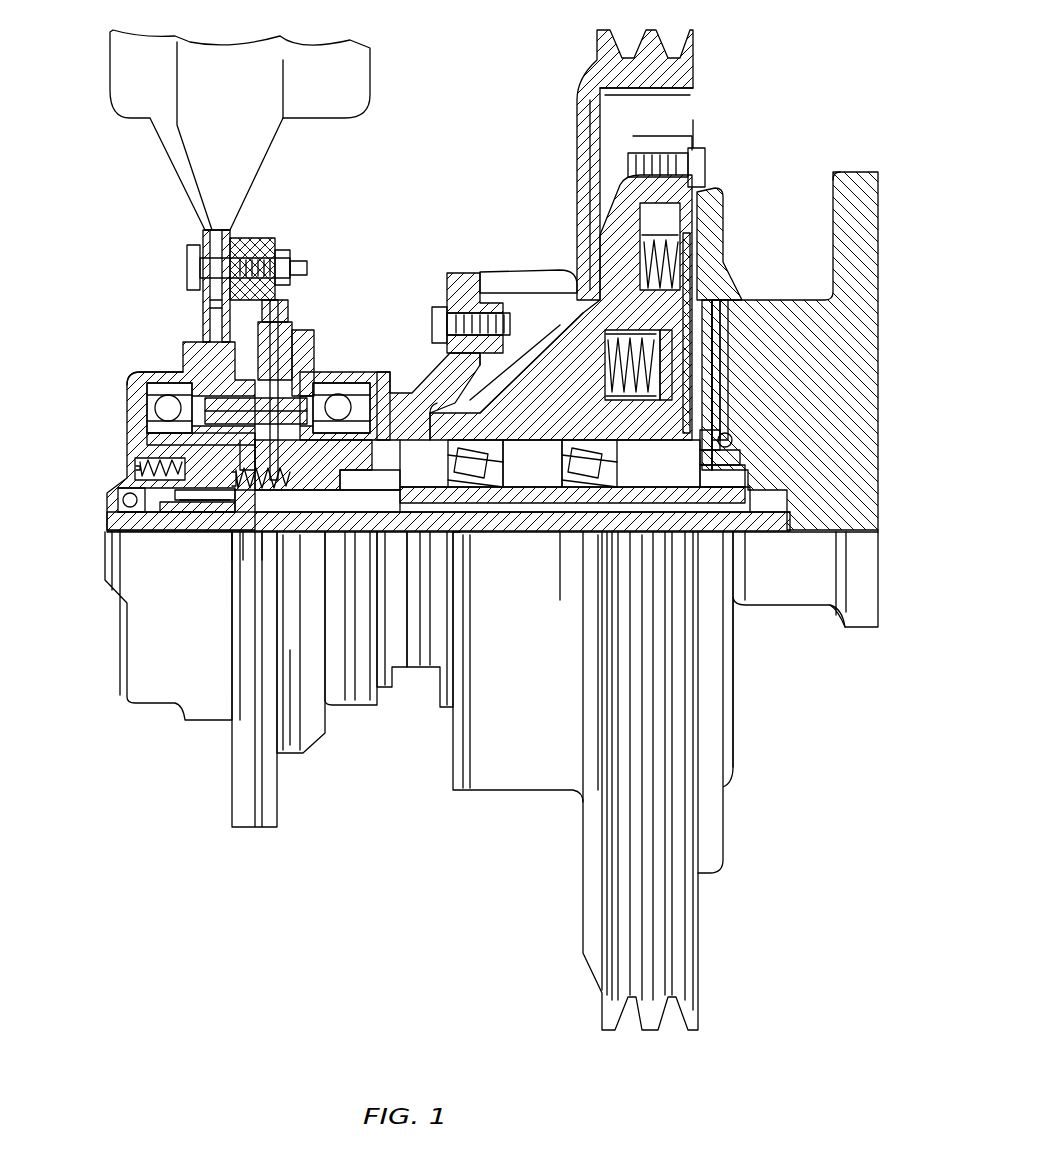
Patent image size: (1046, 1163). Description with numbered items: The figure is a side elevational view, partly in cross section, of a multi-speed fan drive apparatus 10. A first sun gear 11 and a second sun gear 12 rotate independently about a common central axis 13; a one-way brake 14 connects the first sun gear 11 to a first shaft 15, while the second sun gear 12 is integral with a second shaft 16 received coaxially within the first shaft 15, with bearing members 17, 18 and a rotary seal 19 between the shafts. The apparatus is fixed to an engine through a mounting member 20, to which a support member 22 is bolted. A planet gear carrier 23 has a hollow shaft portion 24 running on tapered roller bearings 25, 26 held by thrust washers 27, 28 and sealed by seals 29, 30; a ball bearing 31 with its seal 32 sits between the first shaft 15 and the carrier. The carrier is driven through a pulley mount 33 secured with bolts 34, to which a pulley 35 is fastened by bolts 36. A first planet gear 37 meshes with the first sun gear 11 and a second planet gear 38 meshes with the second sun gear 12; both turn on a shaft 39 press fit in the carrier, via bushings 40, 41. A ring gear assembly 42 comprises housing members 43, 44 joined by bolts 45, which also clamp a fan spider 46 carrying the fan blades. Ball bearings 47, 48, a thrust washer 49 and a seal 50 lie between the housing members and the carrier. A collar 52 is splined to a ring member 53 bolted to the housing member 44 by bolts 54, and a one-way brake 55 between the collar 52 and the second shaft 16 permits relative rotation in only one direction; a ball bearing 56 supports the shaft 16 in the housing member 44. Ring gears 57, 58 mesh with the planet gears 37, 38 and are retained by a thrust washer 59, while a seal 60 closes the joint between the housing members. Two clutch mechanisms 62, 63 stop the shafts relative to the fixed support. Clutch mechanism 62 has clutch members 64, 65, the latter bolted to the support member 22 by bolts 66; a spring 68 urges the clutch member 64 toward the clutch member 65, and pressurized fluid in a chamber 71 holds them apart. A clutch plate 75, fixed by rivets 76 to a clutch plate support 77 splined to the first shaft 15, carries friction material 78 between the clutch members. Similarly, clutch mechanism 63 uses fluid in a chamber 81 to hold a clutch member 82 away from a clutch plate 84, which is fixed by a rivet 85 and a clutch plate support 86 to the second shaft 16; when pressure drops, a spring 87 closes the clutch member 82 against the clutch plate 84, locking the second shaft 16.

The multi-speed fan drive apparatus 10 is at (816, 90).
The first sun gear 11 is at (269, 679).
The second sun gear 12 is at (232, 474).
The central axis 13 is at (832, 530).
The one-way brake 14 is at (272, 545).
The first shaft 15 is at (520, 545).
The second shaft 16 is at (467, 545).
The bearing member 17 is at (268, 545).
The bearing member 18 is at (342, 540).
The rotary seal 19 is at (405, 612).
The mounting member 20 is at (797, 312).
The support member 22 is at (628, 196).
The planet gear carrier 23 is at (282, 545).
The hollow shaft portion 24 is at (544, 514).
The tapered roller bearing 25 is at (488, 515).
The tapered roller bearing 26 is at (568, 545).
The thrust washer 27 is at (455, 545).
The thrust washer 28 is at (615, 540).
The seal 29 is at (470, 442).
The seal 30 is at (626, 444).
The ball bearing 31 is at (318, 542).
The seal 32 is at (412, 545).
The pulley mount 33 is at (500, 372).
The bolts 34 is at (480, 405).
The pulley 35 is at (590, 92).
The bolts 36 is at (430, 305).
The first planet gear 37 is at (368, 330).
The second planet gear 38 is at (225, 392).
The shaft 39 is at (178, 378).
The bushing 40 is at (323, 393).
The bushing 41 is at (150, 442).
The ring gear assembly 42 is at (312, 228).
The housing member 43 is at (300, 332).
The housing member 44 is at (132, 378).
The bolts 45 is at (185, 256).
The fan spider 46 is at (248, 150).
The ball bearing 47 is at (372, 388).
The ball bearing 48 is at (160, 404).
The thrust washer 49 is at (390, 400).
The seal 50 is at (382, 400).
The collar 52 is at (205, 512).
The ring member 53 is at (172, 535).
The bolt 54 is at (142, 466).
The one-way brake 55 is at (205, 500).
The ball bearing 56 is at (125, 496).
The ring gear 57 is at (300, 305).
The ring gear 58 is at (216, 330).
The thrust washer 59 is at (295, 298).
The seal 60 is at (205, 304).
The clutch mechanism 62 is at (583, 290).
The clutch mechanism 63 is at (722, 296).
The clutch member 64 is at (605, 348).
The clutch member 65 is at (728, 345).
The bolts 66 is at (720, 318).
The spring 68 is at (604, 386).
The chamber 71 is at (605, 352).
The clutch plate 75 is at (712, 425).
The rivets 76 is at (732, 436).
The clutch plate support 77 is at (737, 545).
The friction material 78 is at (725, 386).
The chamber 81 is at (700, 206).
The clutch member 82 is at (648, 234).
The clutch plate 84 is at (712, 372).
The rivet 85 is at (740, 455).
The clutch plate support 86 is at (745, 470).
The spring 87 is at (688, 256).